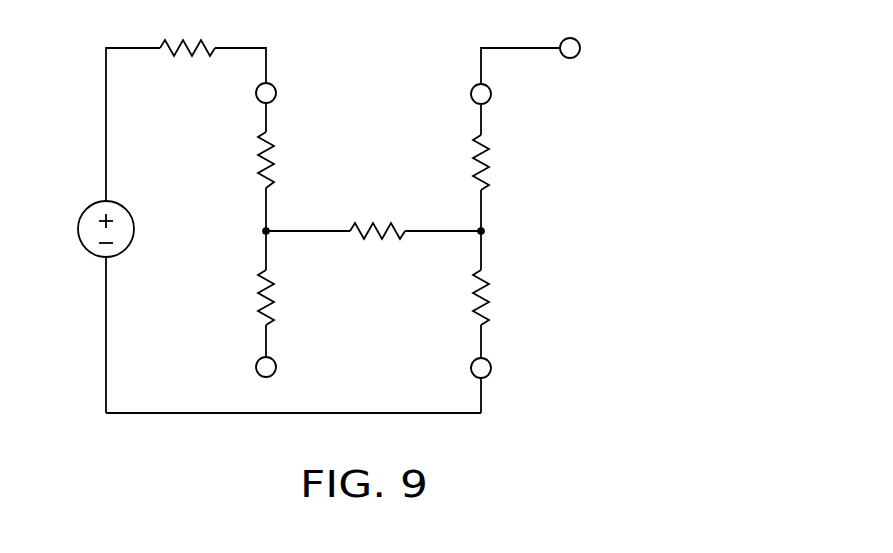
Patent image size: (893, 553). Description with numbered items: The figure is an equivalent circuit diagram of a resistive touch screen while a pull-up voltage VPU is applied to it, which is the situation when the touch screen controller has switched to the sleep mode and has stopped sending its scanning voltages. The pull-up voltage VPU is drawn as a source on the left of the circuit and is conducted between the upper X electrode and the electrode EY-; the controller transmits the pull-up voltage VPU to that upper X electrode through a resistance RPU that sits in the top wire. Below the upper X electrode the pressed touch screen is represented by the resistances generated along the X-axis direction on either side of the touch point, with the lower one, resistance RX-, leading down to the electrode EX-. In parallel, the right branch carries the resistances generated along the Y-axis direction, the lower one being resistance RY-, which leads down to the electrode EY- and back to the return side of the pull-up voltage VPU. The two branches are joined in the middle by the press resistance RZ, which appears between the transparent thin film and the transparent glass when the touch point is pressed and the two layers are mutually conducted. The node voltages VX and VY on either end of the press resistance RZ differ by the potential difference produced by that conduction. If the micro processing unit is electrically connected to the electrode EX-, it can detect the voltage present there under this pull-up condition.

The pull-up voltage VPU is at (85, 229).
The resistance RPU is at (187, 29).
The resistance RX- is at (290, 297).
The resistance RY- is at (505, 297).
The press resistance RZ is at (377, 212).
The voltage VX is at (245, 229).
The voltage VY is at (503, 229).
The electrode EX- is at (276, 368).
The electrode EY- is at (491, 369).